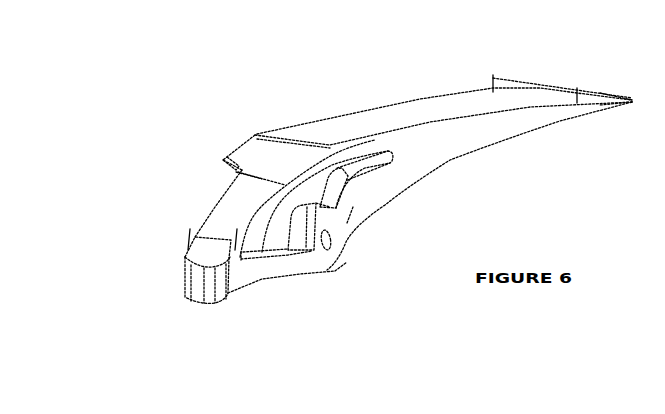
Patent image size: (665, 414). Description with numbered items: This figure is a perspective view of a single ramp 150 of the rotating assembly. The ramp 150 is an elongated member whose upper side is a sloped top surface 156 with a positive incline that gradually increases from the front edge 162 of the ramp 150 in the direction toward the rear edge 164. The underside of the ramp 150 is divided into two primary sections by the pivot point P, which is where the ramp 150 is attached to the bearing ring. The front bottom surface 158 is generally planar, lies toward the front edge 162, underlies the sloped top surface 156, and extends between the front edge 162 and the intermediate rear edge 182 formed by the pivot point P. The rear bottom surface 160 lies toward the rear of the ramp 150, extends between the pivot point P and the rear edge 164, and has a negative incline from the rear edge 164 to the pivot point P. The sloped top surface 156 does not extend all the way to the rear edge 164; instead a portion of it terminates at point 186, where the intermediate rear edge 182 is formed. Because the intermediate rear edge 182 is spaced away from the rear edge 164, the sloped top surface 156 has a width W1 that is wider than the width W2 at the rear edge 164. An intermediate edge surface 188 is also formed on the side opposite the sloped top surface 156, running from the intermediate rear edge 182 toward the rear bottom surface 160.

The ramp 150 is at (358, 92).
The sloped top surface 156 is at (437, 110).
The front bottom surface 158 is at (500, 142).
The rear bottom surface 160 is at (283, 277).
The front edge 162 is at (589, 93).
The rear edge 164 is at (197, 294).
The intermediate rear edge 182 is at (218, 167).
The point 186 is at (247, 175).
The intermediate edge surface 188 is at (236, 176).
The width W1 is at (508, 82).
The width W2 is at (211, 239).
The pivot point P is at (328, 237).